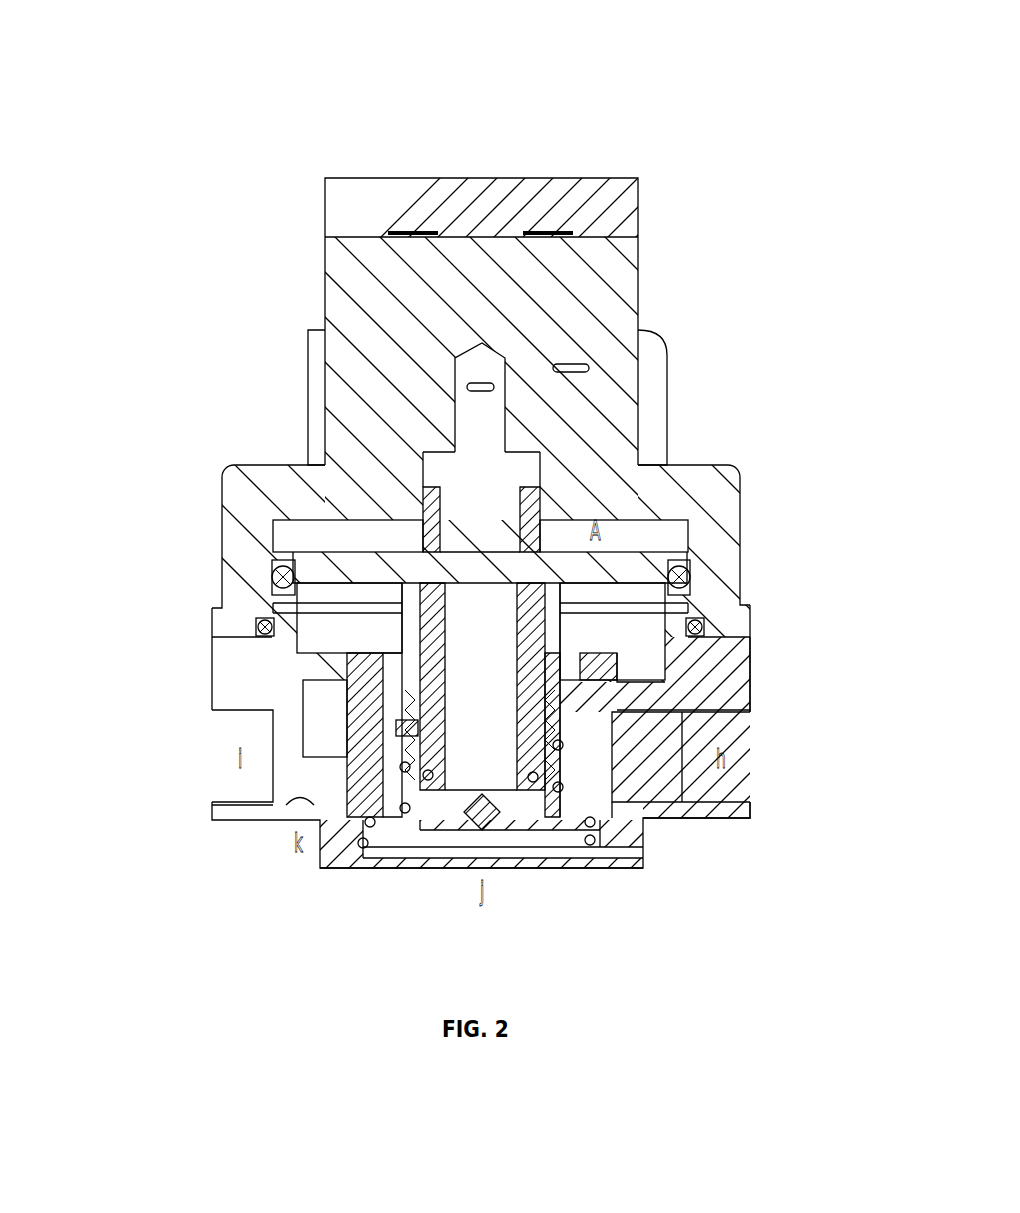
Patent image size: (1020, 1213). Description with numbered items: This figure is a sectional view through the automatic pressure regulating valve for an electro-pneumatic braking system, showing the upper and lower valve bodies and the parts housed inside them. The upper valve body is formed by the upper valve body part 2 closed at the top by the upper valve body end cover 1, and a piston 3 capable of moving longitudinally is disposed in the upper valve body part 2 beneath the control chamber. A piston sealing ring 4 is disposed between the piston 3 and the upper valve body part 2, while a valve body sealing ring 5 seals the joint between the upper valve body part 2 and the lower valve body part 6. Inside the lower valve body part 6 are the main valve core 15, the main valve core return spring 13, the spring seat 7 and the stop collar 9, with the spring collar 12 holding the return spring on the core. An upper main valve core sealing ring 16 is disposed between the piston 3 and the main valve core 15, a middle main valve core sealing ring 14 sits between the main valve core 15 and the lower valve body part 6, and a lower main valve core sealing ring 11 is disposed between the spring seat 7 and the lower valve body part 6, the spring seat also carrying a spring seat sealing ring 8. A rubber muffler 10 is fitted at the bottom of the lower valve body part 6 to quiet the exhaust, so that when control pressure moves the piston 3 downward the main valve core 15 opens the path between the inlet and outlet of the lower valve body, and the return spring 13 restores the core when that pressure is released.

The upper valve body end cover 1 is at (388, 215).
The upper valve body part 2 is at (548, 258).
The piston 3 is at (530, 497).
The piston sealing ring 4 is at (692, 560).
The valve body sealing ring 5 is at (695, 627).
The lower valve body part 6 is at (712, 670).
The spring seat 7 is at (560, 832).
The spring seat sealing ring 8 is at (600, 862).
The stop collar 9 is at (360, 842).
The rubber muffler 10 is at (400, 803).
The lower main valve core sealing ring 11 is at (405, 767).
The spring collar 12 is at (407, 728).
The main valve core return spring 13 is at (265, 627).
The middle main valve core sealing ring 14 is at (275, 560).
The main valve core 15 is at (438, 674).
The upper main valve core sealing ring 16 is at (438, 599).